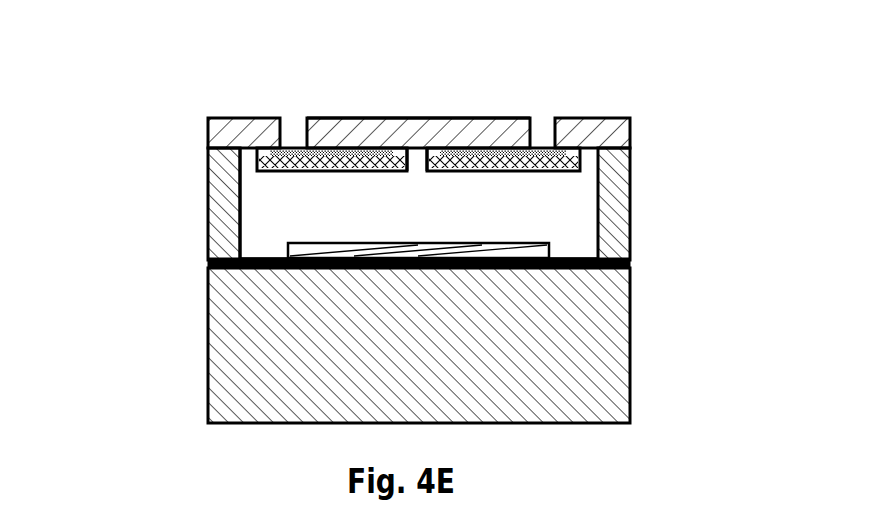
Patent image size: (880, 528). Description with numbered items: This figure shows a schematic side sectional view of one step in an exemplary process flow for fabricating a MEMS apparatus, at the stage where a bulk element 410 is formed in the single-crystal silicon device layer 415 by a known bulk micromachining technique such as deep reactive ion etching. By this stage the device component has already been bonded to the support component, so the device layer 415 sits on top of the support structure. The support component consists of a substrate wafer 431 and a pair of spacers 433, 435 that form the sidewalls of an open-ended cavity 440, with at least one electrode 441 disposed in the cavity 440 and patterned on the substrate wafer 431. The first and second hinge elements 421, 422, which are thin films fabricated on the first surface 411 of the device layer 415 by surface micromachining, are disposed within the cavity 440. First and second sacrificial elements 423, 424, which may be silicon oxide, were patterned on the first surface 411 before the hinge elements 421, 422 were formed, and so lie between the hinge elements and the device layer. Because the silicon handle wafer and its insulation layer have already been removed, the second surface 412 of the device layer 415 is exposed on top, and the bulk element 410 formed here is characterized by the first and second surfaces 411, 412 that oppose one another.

The bulk element 410 is at (357, 110).
The first surface 411 is at (417, 150).
The second surface 412 is at (410, 118).
The single-crystal silicon device layer 415 is at (208, 132).
The first hinge element 421 is at (208, 157).
The second hinge element 422 is at (629, 158).
The first sacrificial element 423 is at (295, 148).
The second sacrificial element 424 is at (542, 148).
The substrate wafer 431 is at (208, 308).
The spacer 433 is at (208, 202).
The spacer 435 is at (629, 223).
The cavity 440 is at (267, 210).
The electrode 441 is at (549, 253).